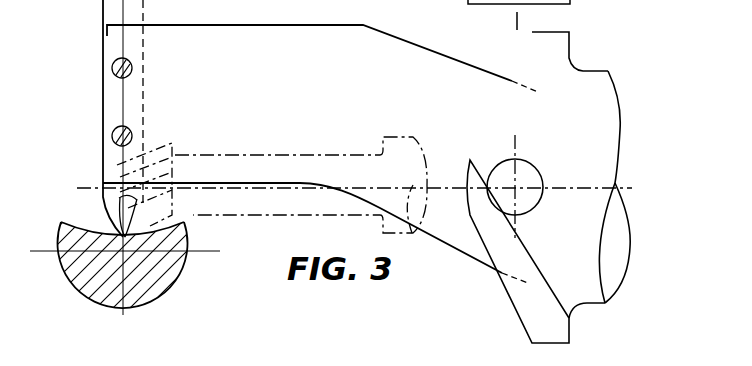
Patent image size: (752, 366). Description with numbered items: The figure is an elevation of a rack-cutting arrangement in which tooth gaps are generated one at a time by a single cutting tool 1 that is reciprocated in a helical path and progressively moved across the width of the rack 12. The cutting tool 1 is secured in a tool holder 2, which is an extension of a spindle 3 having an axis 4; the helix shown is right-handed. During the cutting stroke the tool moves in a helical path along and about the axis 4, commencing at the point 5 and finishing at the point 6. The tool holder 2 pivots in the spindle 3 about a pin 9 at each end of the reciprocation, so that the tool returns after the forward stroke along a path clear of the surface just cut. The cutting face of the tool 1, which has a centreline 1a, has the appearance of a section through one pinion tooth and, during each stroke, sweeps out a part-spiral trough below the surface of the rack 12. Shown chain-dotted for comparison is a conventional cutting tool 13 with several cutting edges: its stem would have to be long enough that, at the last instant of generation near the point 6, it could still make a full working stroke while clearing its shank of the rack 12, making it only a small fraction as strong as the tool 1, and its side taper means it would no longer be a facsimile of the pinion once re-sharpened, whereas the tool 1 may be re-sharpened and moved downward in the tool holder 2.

The cutting tool 1 is at (142, 15).
The centreline 1a is at (120, 8).
The tool holder 2 is at (438, 72).
The spindle 3 is at (537, 310).
The axis 4 is at (600, 187).
The commencing point 5 is at (198, 207).
The finishing point 6 is at (70, 222).
The pin 9 is at (505, 213).
The rack 12 is at (163, 295).
The conventional cutting tool 13 is at (283, 155).